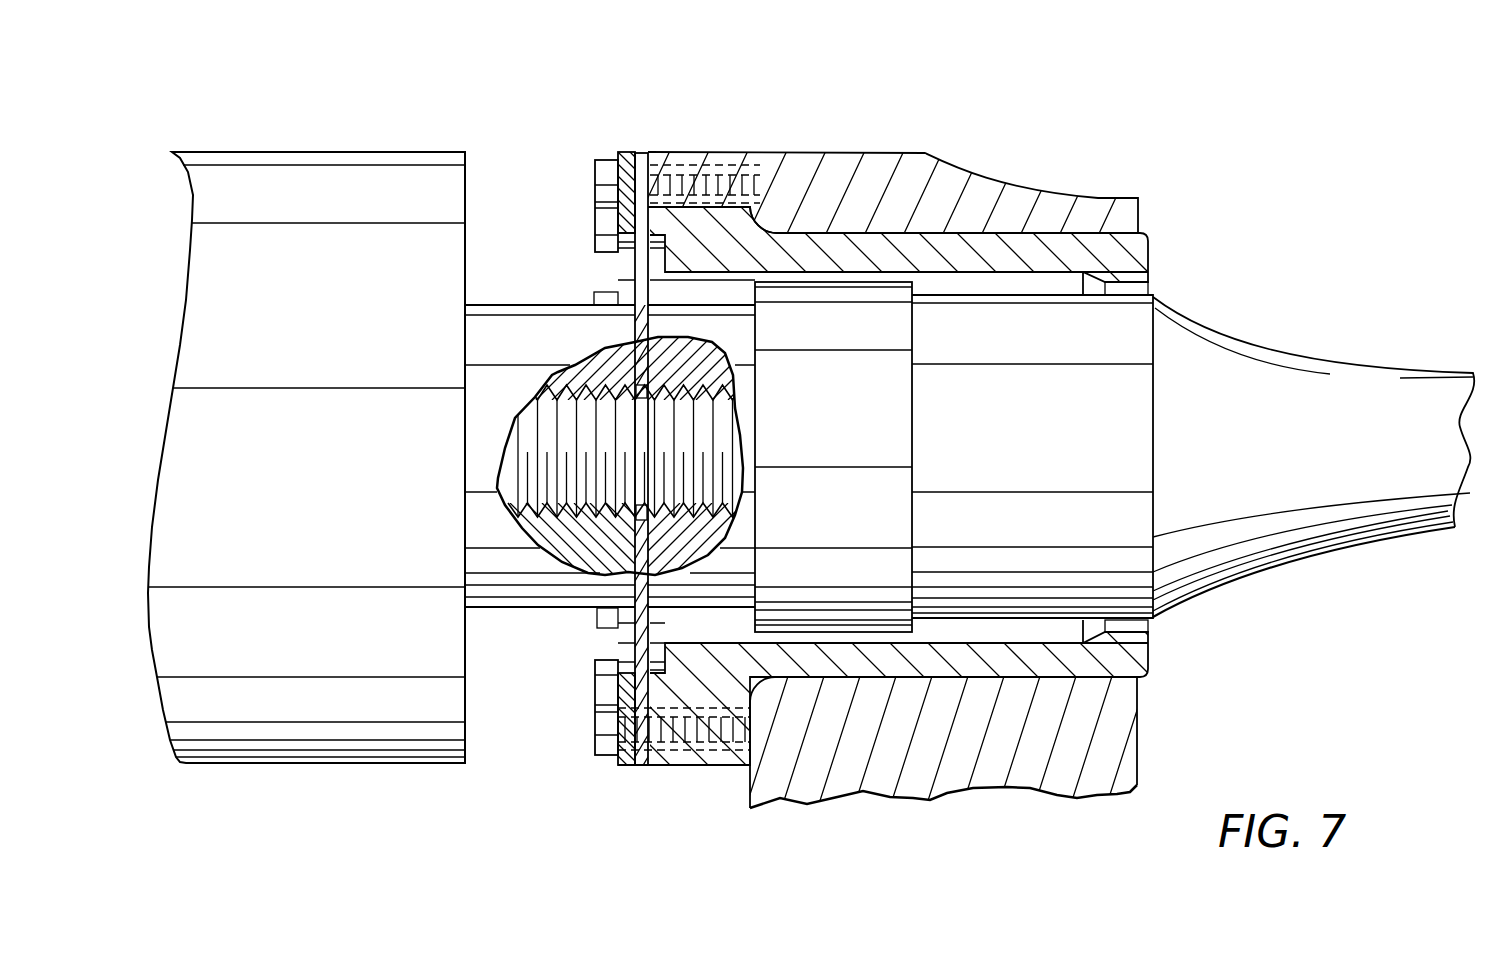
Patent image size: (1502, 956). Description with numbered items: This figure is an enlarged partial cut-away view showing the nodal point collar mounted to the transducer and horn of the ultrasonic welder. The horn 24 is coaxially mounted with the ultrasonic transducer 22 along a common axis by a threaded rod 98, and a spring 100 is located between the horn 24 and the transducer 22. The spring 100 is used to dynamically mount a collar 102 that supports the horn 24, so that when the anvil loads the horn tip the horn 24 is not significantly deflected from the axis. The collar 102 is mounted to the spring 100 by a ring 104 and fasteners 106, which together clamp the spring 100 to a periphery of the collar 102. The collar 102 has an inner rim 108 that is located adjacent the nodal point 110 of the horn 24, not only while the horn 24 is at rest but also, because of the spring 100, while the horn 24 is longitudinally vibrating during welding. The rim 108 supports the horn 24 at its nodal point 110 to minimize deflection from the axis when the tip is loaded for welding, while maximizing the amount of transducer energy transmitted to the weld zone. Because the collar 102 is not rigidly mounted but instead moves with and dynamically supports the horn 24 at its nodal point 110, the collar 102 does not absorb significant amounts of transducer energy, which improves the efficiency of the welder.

The ultrasonic transducer 22 is at (295, 450).
The horn 24 is at (1037, 429).
The threaded rod 98 is at (688, 448).
The spring 100 is at (645, 152).
The collar 102 is at (823, 255).
The ring 104 is at (627, 152).
The fasteners 106 is at (605, 176).
The inner rim 108 is at (1137, 627).
The nodal point 110 is at (1153, 572).